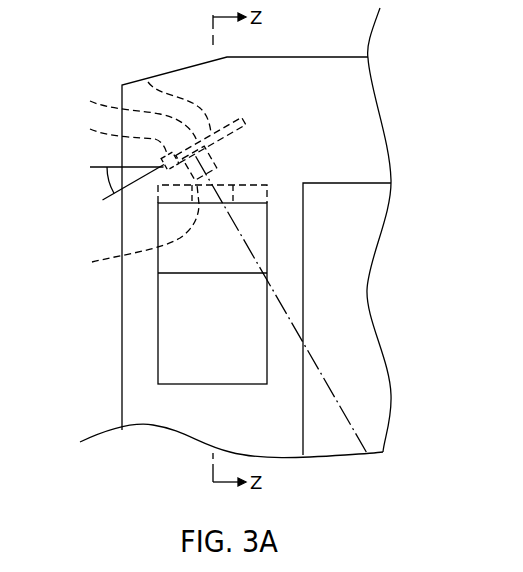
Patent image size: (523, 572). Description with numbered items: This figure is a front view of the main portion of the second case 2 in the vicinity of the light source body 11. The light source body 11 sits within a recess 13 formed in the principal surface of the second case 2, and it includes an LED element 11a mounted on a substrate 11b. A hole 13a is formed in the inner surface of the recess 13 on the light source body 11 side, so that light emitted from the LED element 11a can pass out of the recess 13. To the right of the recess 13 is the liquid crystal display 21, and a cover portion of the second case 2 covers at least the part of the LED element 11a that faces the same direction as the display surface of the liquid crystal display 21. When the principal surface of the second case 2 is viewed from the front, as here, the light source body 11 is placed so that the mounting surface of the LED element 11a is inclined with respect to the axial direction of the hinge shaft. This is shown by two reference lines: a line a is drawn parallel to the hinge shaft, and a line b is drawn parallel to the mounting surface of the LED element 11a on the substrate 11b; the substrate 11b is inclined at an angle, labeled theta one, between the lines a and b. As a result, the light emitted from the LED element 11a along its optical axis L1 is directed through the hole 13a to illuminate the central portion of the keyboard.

The second case 2 is at (335, 72).
The light source body 11 is at (148, 79).
The LED element 11a is at (125, 115).
The substrate 11b is at (110, 136).
The recess 13 is at (173, 335).
The hole 13a is at (127, 229).
The liquid crystal display 21 is at (348, 238).
The optical axis L1 is at (325, 382).
The line a is at (100, 167).
The line b is at (105, 203).